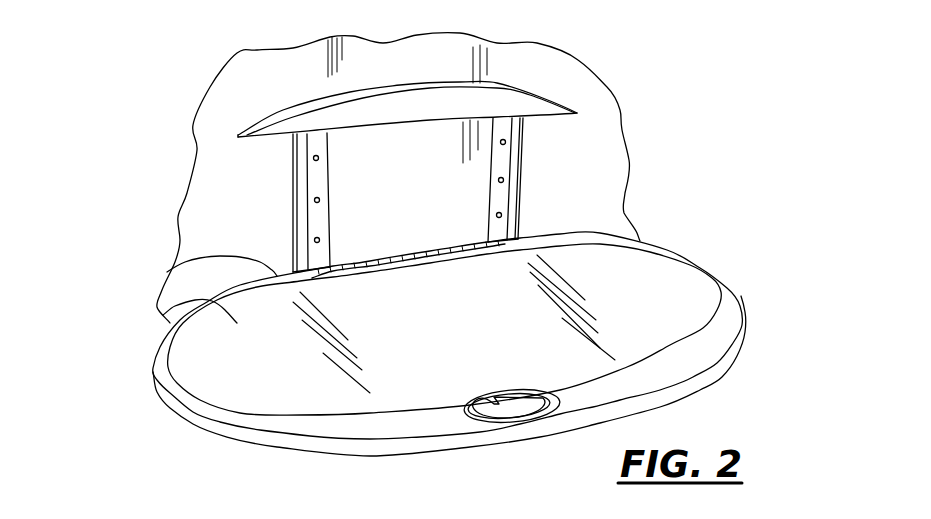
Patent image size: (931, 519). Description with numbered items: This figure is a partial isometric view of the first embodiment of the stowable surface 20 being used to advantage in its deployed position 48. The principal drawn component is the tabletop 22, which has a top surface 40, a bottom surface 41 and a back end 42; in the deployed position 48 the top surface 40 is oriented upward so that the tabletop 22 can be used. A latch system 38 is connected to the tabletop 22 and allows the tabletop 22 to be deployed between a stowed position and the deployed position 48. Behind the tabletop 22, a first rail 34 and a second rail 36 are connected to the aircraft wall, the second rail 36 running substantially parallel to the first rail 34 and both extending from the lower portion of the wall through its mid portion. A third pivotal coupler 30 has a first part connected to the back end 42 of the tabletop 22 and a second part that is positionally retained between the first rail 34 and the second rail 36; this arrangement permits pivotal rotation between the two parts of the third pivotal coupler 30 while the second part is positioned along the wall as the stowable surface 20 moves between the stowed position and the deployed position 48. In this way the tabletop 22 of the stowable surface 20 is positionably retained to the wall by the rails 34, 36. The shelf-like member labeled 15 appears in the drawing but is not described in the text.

The shelf 15 is at (322, 113).
The stowable surface 20 is at (675, 227).
The tabletop 22 is at (725, 285).
The third pivotal coupler 30 is at (527, 222).
The first rail 34 is at (293, 212).
The second rail 36 is at (520, 167).
The latch system 38 is at (583, 398).
The top surface 40 is at (165, 312).
The bottom surface 41 is at (178, 425).
The back end 42 is at (167, 272).
The deployed position 48 is at (366, 213).